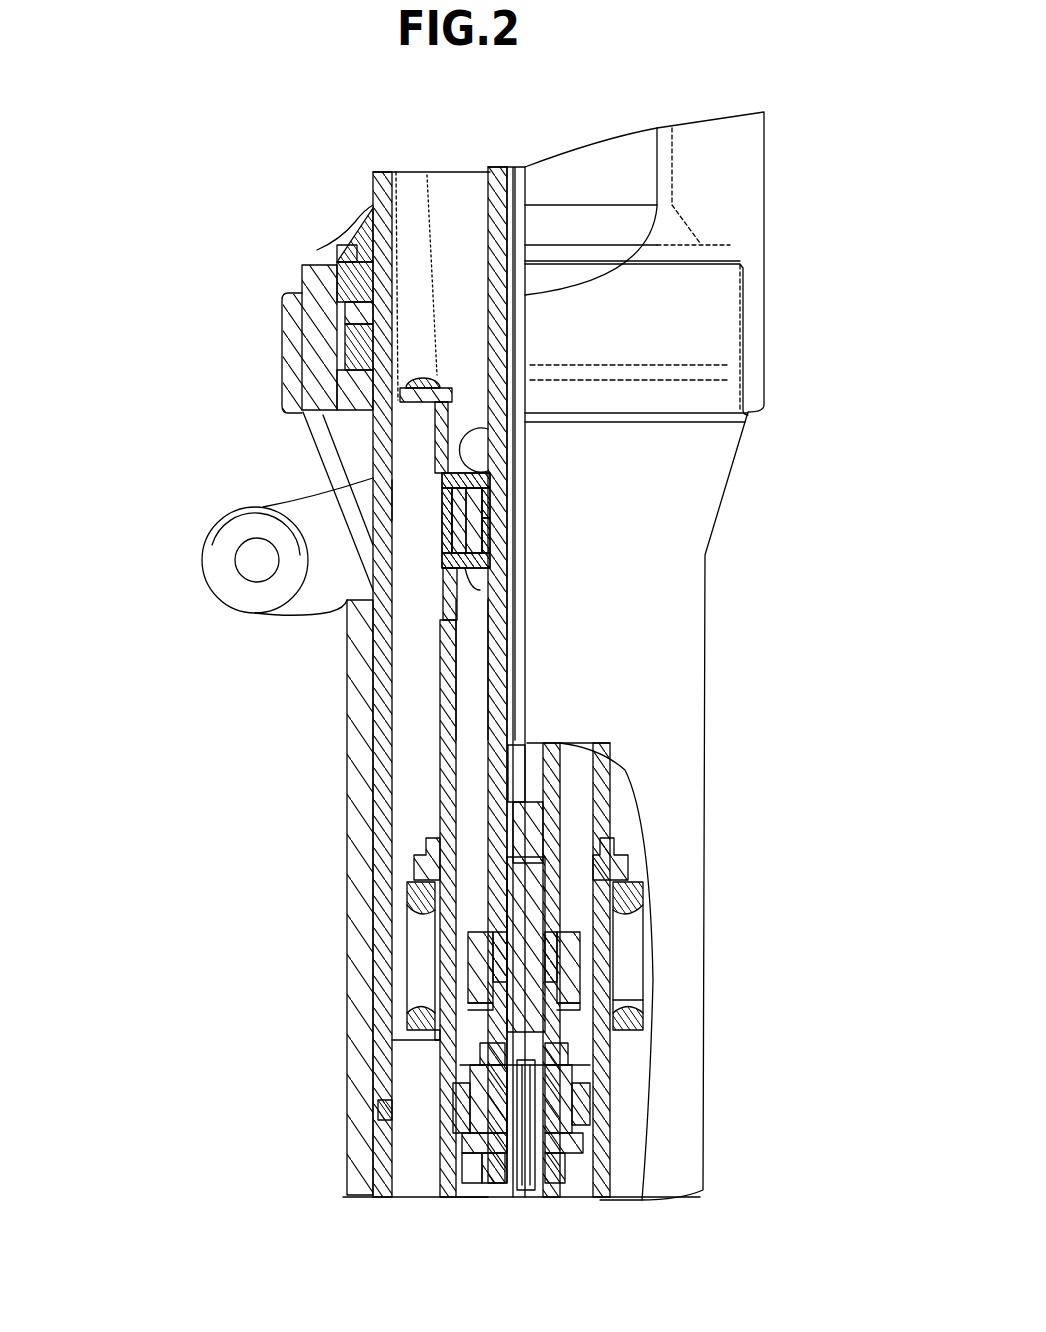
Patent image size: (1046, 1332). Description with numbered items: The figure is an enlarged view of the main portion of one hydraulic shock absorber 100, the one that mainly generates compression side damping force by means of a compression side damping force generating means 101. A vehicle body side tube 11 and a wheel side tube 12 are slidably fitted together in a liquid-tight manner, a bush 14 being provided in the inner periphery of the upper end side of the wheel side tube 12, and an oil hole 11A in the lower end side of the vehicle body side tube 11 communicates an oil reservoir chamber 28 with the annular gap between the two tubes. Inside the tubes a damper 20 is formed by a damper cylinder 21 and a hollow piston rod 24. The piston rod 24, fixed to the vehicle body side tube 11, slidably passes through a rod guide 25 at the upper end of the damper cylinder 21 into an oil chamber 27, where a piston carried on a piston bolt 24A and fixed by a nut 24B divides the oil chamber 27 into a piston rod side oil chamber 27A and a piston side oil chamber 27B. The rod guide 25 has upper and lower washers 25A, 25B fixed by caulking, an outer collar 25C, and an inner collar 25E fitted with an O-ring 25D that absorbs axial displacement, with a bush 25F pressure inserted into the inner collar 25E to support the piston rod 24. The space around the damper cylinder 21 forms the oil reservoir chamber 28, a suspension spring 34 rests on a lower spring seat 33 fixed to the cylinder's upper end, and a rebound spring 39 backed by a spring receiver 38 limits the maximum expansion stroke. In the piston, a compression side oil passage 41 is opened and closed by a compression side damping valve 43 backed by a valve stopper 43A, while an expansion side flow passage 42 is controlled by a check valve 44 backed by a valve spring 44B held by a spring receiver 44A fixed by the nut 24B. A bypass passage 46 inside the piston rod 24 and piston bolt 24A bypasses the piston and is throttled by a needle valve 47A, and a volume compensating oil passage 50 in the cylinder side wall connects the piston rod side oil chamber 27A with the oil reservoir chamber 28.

The hydraulic shock absorber 100 is at (243, 226).
The vehicle body side tube 11 is at (373, 196).
The oil hole 11A is at (383, 1138).
The wheel side tube 12 is at (347, 746).
The bush 14 is at (408, 460).
The damper 20 is at (412, 498).
The damper cylinder 21 is at (440, 686).
The piston rod 24 is at (497, 212).
The piston bolt 24A is at (598, 963).
The nut 24B is at (548, 1185).
The rod guide 25 is at (448, 553).
The upper washer 25A is at (490, 460).
The lower washer 25B is at (472, 585).
The outer collar 25C is at (440, 528).
The O-ring 25D is at (448, 540).
The inner collar 25E is at (490, 500).
The bush 25F is at (490, 535).
The oil chamber 27 is at (473, 647).
The piston rod side oil chamber 27A is at (473, 690).
The piston side oil chamber 27B is at (472, 1198).
The oil reservoir chamber 28 is at (440, 512).
The lower spring seat 33 is at (456, 398).
The suspension spring 34 is at (425, 375).
The spring receiver 38 is at (420, 864).
The rebound spring 39 is at (438, 1038).
The compression side oil passage 41 is at (592, 1095).
The expansion side flow passage 42 is at (453, 1102).
The compression side damping valve 43 is at (575, 1062).
The valve stopper 43A is at (570, 1050).
The check valve 44 is at (460, 1146).
The spring receiver 44A is at (482, 1178).
The valve spring 44B is at (468, 1160).
The bypass passage 46 is at (615, 1003).
The needle valve 47A is at (620, 873).
The oil passage 50 is at (440, 605).
The compression side damping force generating means 101 is at (460, 1052).